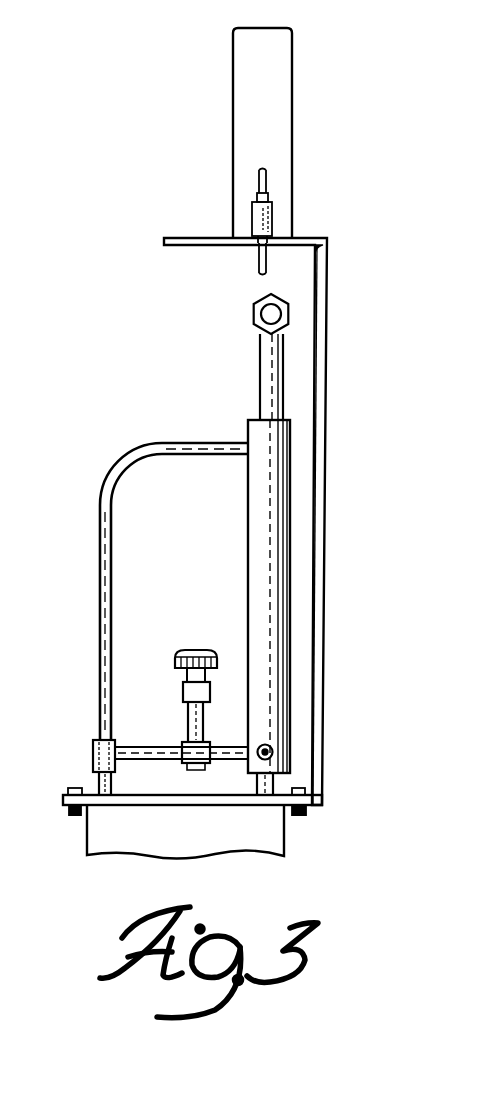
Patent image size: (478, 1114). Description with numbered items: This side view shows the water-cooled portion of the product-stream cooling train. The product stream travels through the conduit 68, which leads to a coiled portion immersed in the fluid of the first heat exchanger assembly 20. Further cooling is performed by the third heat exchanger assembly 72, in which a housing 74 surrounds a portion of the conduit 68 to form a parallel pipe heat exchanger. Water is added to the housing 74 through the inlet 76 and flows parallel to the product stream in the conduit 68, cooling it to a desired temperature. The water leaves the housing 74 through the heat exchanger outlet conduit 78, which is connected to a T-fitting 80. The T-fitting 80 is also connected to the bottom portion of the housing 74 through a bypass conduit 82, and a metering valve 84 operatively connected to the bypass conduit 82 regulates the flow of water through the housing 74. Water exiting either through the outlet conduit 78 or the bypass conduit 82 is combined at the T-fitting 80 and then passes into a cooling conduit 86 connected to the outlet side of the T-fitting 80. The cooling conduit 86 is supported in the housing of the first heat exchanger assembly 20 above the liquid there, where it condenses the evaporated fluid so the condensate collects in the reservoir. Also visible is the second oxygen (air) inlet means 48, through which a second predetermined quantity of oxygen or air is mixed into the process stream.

The first heat exchanger assembly 20 is at (285, 848).
The second oxygen (air) inlet means 48 is at (258, 253).
The conduit 68 is at (275, 784).
The third heat exchanger assembly 72 is at (286, 613).
The housing 74 is at (276, 669).
The inlet 76 is at (274, 752).
The heat exchanger outlet conduit 78 is at (170, 446).
The T-fitting 80 is at (93, 752).
The bypass conduit 82 is at (233, 763).
The metering valve 84 is at (193, 649).
The cooling conduit 86 is at (107, 779).